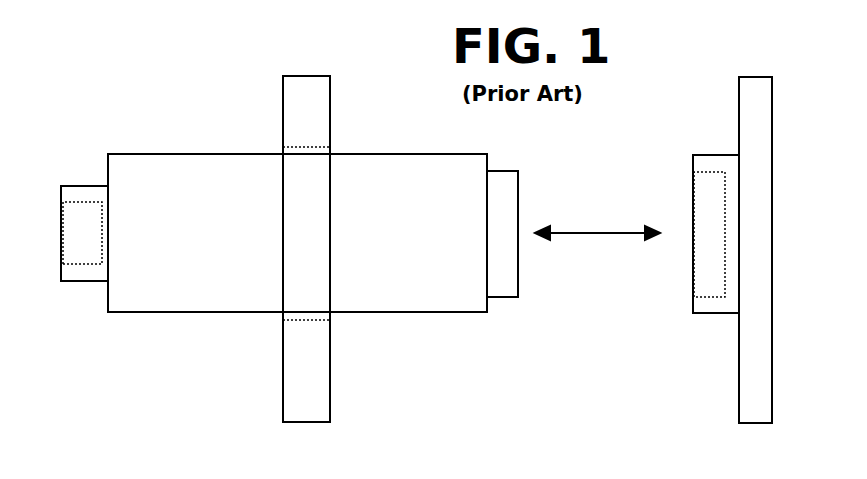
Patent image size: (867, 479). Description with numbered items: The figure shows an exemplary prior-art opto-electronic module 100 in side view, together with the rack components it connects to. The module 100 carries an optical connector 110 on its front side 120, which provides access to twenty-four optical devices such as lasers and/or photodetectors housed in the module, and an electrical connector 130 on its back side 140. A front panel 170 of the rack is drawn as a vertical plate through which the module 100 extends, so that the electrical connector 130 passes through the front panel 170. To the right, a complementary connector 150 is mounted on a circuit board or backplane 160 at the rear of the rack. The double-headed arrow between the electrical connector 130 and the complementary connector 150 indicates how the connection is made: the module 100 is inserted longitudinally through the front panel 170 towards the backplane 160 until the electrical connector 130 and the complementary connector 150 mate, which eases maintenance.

The opto-electronic module 100 is at (204, 153).
The optical connector 110 is at (76, 184).
The front side 120 is at (108, 297).
The electrical connector 130 is at (506, 193).
The back side 140 is at (487, 305).
The complementary connector 150 is at (713, 159).
The backplane 160 is at (739, 363).
The front panel 170 is at (315, 406).